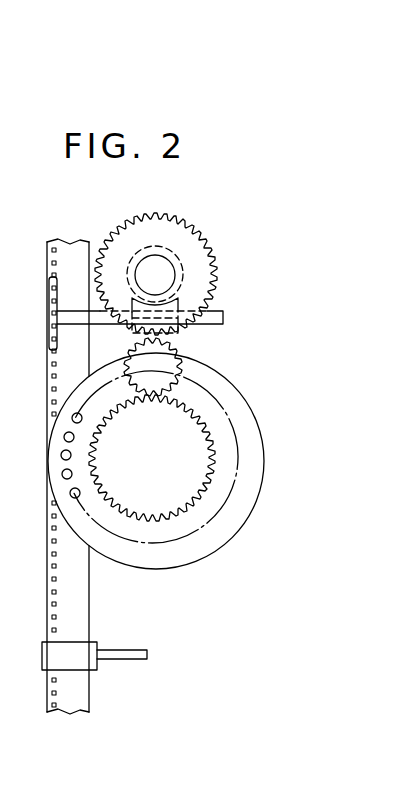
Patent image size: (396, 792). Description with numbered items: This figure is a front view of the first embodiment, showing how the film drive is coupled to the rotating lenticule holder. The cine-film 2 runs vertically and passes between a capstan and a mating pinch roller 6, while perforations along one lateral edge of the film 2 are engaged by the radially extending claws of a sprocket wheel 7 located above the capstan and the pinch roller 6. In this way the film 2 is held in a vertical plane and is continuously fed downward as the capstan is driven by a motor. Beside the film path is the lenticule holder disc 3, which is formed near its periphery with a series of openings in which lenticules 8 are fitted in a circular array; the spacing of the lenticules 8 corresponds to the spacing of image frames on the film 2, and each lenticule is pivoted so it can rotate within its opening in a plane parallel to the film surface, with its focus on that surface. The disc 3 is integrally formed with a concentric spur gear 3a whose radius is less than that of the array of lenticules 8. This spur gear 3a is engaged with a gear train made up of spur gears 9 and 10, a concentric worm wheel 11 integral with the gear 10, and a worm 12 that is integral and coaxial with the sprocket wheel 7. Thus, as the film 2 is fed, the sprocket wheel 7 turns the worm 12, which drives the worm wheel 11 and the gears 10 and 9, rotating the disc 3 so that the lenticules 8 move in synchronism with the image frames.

The cine-film 2 is at (47, 522).
The lenticule holder disc 3 is at (176, 561).
The spur gear 3a is at (200, 503).
The pinch roller 6 is at (45, 657).
The sprocket wheel 7 is at (50, 338).
The lenticules 8 is at (62, 474).
The spur gear 9 is at (192, 365).
The spur gear 10 is at (200, 237).
The worm wheel 11 is at (155, 246).
The worm 12 is at (180, 302).